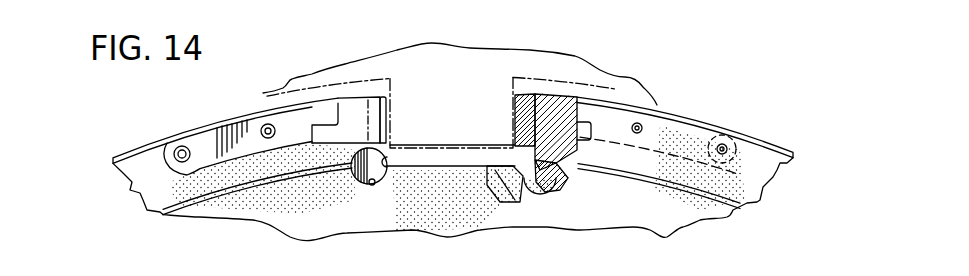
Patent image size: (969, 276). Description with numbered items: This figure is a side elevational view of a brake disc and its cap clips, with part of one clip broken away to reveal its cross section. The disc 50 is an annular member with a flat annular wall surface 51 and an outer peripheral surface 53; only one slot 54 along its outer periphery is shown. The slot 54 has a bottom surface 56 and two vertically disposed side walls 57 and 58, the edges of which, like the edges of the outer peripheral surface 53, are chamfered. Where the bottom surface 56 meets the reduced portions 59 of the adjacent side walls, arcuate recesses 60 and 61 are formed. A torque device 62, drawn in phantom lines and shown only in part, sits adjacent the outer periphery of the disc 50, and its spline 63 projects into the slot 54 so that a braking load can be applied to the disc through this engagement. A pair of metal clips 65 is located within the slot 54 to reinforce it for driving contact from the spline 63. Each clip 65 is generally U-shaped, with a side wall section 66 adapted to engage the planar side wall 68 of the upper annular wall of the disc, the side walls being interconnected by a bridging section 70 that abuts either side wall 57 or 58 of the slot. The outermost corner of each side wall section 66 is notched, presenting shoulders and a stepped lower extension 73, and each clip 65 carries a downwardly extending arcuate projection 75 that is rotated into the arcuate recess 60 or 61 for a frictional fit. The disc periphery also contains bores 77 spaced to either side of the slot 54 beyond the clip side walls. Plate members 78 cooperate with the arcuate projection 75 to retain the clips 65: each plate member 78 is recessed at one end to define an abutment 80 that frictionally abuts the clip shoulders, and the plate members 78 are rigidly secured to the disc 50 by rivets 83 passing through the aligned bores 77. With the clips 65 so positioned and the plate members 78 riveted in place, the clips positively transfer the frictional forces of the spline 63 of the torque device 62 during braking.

The disc 50 is at (290, 237).
The flat annular wall surface 51 is at (655, 217).
The outer peripheral surface 53 is at (771, 143).
The slot 54 is at (450, 80).
The bottom surface 56 is at (448, 163).
The side wall 57 is at (390, 99).
The side wall 58 is at (513, 100).
The reduced portion 59 is at (155, 146).
The arcuate recess 60 is at (416, 145).
The arcuate recess 61 is at (547, 191).
The torque device 62 is at (362, 65).
The spline 63 is at (430, 187).
The clip 65 is at (378, 95).
The side wall section 66 is at (350, 107).
The planar side wall 68 is at (147, 165).
The bridging section 70 is at (392, 128).
The stepped lower extension 73 is at (327, 140).
The downwardly extending projection 75 is at (357, 178).
The bore 77 is at (734, 160).
The plate member 78 is at (200, 130).
The abutment 80 is at (323, 115).
The rivet 83 is at (176, 148).